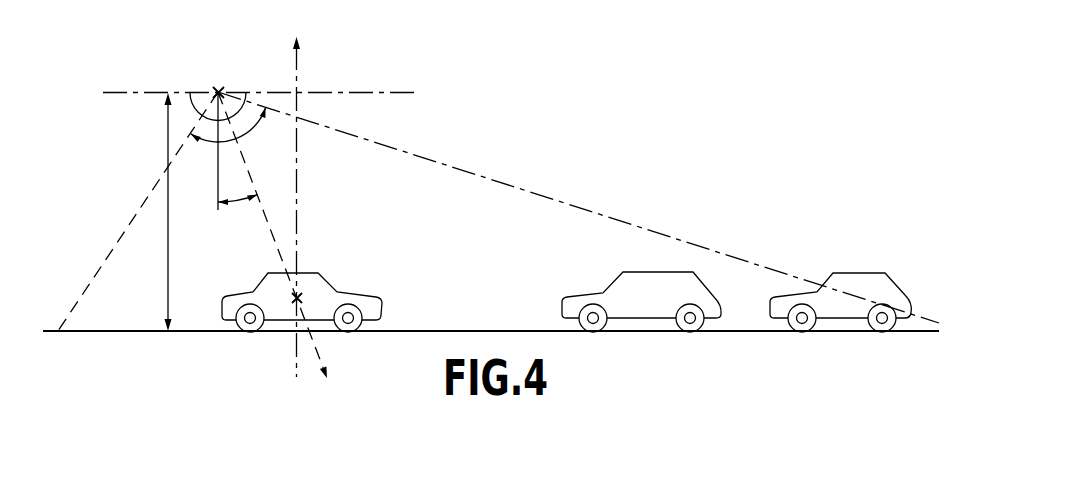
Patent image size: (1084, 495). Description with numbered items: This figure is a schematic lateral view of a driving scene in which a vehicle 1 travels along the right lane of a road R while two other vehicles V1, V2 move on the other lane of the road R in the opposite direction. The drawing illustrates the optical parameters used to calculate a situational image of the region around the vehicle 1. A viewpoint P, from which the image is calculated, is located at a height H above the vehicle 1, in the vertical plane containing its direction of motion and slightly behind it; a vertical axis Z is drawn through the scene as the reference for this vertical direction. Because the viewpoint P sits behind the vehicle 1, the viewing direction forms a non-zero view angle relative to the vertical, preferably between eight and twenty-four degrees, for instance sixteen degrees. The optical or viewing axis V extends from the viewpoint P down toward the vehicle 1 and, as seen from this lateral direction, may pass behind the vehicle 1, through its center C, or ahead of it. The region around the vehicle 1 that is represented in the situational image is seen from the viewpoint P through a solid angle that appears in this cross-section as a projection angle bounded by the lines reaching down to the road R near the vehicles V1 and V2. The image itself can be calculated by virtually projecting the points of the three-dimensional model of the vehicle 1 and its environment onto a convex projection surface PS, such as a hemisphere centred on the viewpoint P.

The viewpoint P is at (261, 81).
The vertical axis Z is at (299, 67).
The height H is at (160, 212).
The projection surface PS is at (206, 128).
The optical axis V is at (272, 247).
The vehicle 1 is at (229, 278).
The center of vehicle C is at (301, 295).
The road R is at (469, 323).
The vehicle V1 is at (657, 257).
The vehicle V2 is at (855, 254).